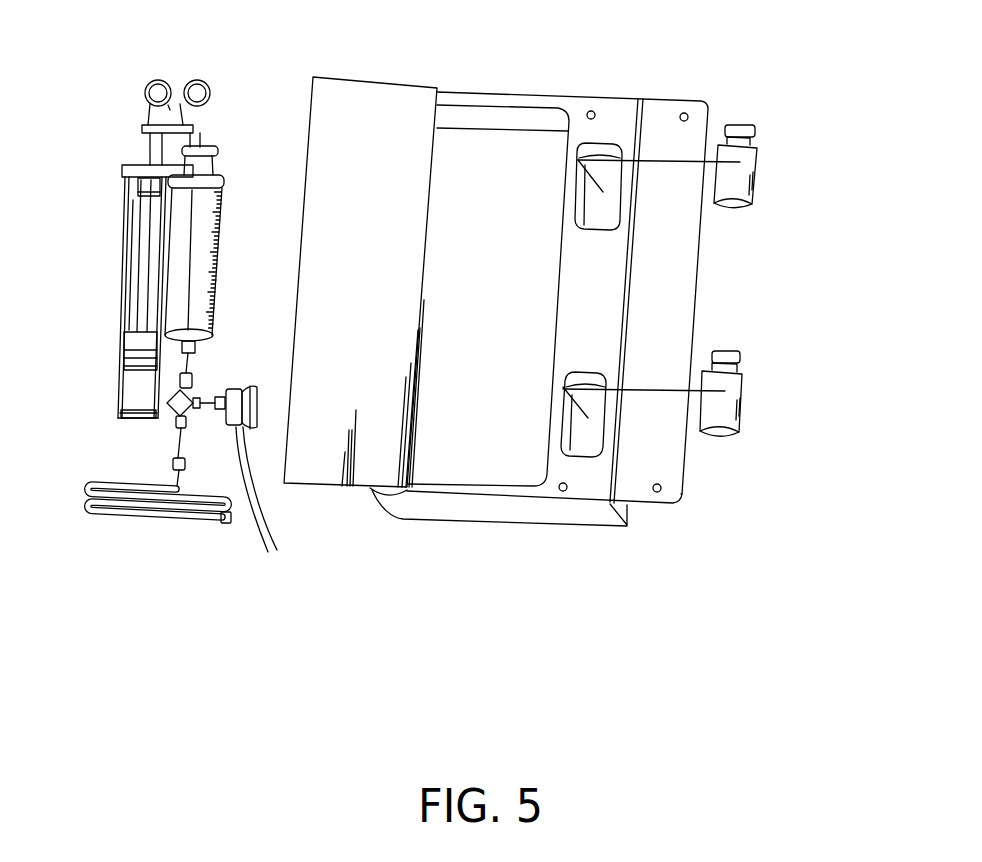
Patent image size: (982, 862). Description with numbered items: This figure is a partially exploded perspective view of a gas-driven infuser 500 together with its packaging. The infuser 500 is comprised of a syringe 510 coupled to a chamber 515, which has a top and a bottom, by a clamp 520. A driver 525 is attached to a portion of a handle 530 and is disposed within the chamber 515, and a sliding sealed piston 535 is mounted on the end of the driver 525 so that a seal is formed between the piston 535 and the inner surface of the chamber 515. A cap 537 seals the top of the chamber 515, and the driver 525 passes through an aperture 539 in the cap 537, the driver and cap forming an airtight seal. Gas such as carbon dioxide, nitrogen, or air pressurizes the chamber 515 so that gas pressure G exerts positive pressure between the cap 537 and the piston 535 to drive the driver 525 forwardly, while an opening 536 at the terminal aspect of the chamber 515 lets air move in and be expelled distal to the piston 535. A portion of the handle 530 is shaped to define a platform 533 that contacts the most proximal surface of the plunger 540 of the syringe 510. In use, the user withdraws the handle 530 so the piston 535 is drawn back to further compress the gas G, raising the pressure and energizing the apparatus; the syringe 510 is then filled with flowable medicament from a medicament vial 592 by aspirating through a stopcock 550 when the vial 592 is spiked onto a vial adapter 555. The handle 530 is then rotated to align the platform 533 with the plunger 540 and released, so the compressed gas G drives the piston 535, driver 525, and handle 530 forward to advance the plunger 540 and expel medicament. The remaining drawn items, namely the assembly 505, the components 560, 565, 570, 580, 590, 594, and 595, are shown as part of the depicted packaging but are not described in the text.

The infuser 500 is at (110, 157).
The holder assembly 505 is at (694, 87).
The syringe 510 is at (195, 193).
The chamber 515 is at (120, 400).
The clamp 520 is at (135, 166).
The driver 525 is at (143, 300).
The handle 530 is at (197, 82).
The platform 533 is at (198, 145).
The sliding sealed piston 535 is at (137, 372).
The opening 536 is at (137, 415).
The cap 537 is at (152, 188).
The aperture 539 is at (147, 193).
The gas pressure G is at (137, 243).
The plunger 540 is at (690, 135).
The stopcock 550 is at (672, 452).
The vial adapter 555 is at (270, 552).
The connector 560 is at (238, 422).
The tube channel 565 is at (597, 495).
The coiled tubing 570 is at (206, 524).
The tray 580 is at (533, 100).
The lower panel 590 is at (497, 517).
The medicament vial 592 is at (737, 378).
The vial slots 594 is at (605, 382).
The instruction sheet 595 is at (445, 478).